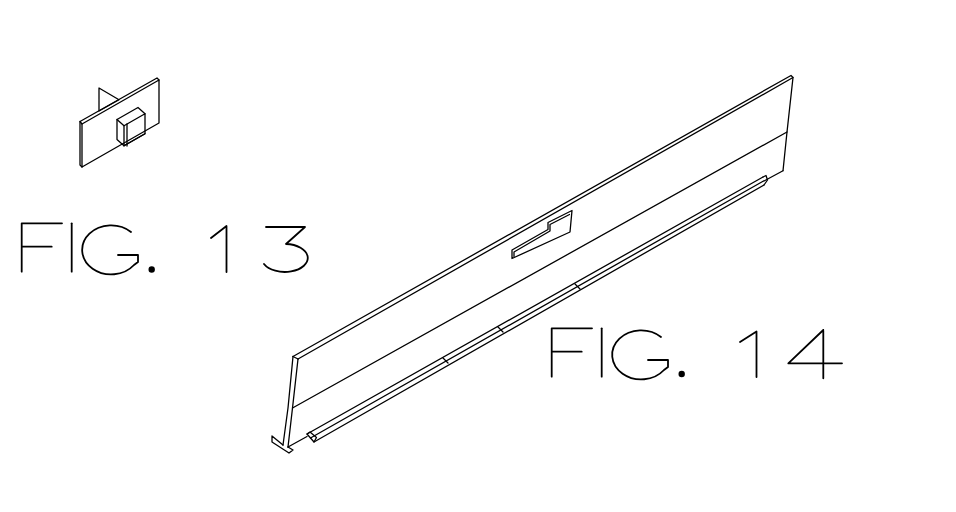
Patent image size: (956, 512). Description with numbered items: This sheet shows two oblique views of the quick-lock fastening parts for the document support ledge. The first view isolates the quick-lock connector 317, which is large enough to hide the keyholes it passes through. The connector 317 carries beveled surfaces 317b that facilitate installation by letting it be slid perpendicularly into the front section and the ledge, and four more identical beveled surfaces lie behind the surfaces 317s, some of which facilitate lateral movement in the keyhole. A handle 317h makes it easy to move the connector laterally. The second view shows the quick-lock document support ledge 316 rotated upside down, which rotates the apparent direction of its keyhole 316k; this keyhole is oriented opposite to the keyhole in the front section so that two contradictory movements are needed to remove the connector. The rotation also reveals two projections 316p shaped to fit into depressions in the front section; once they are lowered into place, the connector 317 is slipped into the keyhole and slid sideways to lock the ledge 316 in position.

In FIG. 14, the quick-lock document support ledge 316 is at (288, 390).
In FIG. 14, the keyhole 316k is at (535, 240).
In FIG. 14, the projections 316p is at (638, 248).
In FIG. 13, the quick-lock connector 317 is at (160, 98).
In FIG. 13, the handle 317h is at (108, 89).
In FIG. 13, the beveled surfaces 317b is at (128, 147).
In FIG. 13, the surfaces 317s is at (125, 148).